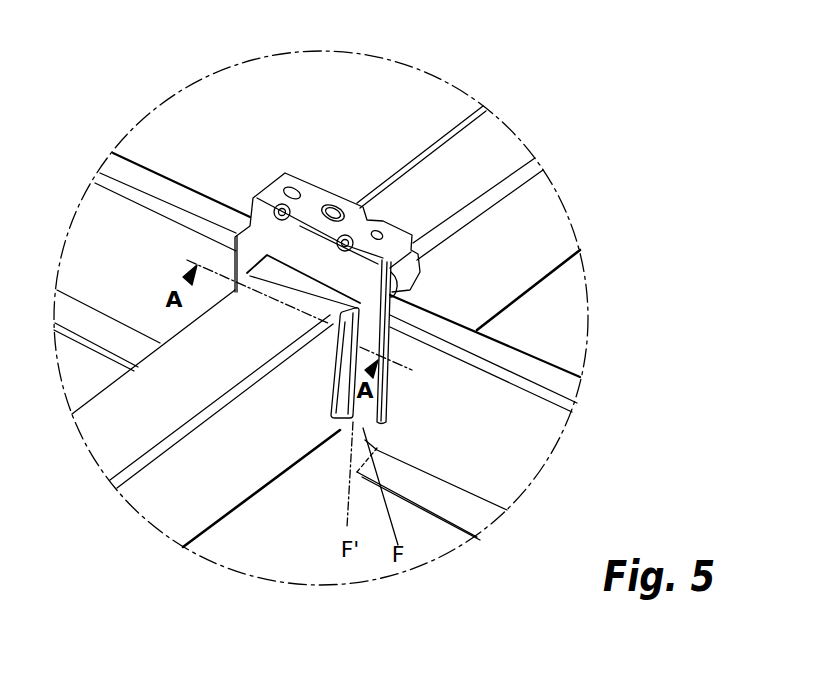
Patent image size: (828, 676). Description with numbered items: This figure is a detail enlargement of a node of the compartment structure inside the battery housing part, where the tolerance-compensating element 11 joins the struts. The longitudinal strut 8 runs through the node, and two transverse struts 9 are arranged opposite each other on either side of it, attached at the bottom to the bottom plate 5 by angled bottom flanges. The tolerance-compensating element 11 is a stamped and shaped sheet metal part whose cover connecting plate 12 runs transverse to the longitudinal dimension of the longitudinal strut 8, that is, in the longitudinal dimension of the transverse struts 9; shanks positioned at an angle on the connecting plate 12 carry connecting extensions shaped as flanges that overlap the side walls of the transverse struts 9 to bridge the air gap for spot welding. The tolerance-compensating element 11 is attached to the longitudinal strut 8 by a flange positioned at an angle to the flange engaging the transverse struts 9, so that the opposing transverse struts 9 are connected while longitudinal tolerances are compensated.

The bottom plate 5 is at (302, 551).
The longitudinal strut 8 is at (239, 450).
The transverse struts 9 is at (142, 272).
The tolerance-compensating element 11 is at (272, 178).
The cover connecting plate 12 is at (312, 205).